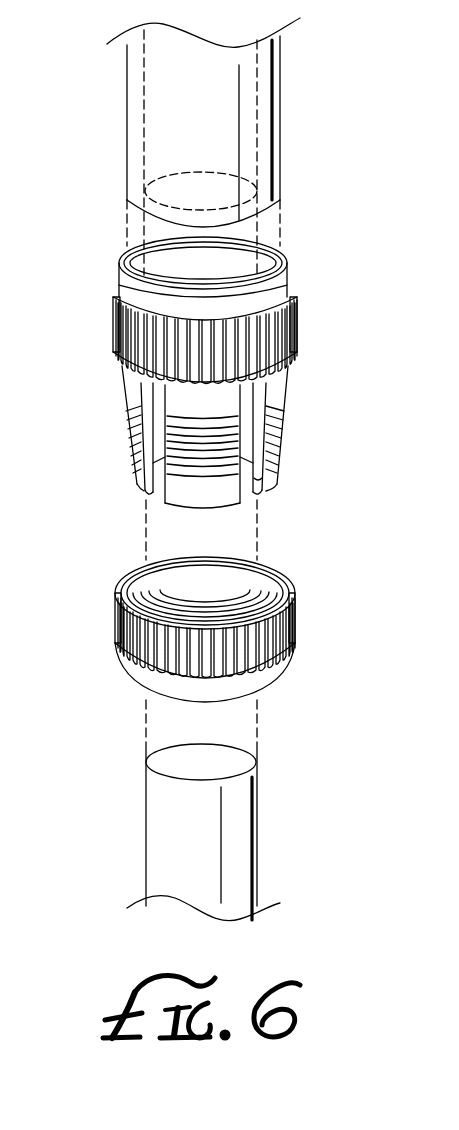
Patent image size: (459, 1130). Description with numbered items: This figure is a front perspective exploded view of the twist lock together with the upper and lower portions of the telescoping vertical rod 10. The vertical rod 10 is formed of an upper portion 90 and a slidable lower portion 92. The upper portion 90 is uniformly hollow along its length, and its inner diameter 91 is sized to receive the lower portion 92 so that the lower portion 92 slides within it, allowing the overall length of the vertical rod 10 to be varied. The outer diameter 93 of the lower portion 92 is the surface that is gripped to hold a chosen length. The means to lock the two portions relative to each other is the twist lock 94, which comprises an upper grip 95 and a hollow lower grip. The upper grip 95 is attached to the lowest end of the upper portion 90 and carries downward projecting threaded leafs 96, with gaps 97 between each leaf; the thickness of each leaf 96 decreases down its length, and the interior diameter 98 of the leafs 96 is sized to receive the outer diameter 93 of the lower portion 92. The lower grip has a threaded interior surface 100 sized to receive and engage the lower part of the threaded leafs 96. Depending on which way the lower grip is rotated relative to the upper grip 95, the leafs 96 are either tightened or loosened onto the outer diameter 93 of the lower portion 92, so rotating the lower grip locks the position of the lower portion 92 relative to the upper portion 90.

The vertical rod 10 is at (112, 107).
The upper portion 90 is at (235, 143).
The inner diameter 91 is at (258, 93).
The lower portion 92 is at (232, 860).
The outer diameter 93 is at (258, 806).
The twist lock 94 is at (235, 381).
The upper grip 95 is at (295, 318).
The threaded leafs 96 is at (275, 382).
The gaps 97 is at (162, 495).
The interior diameter 98 is at (263, 477).
The threaded interior surface 100 is at (190, 573).